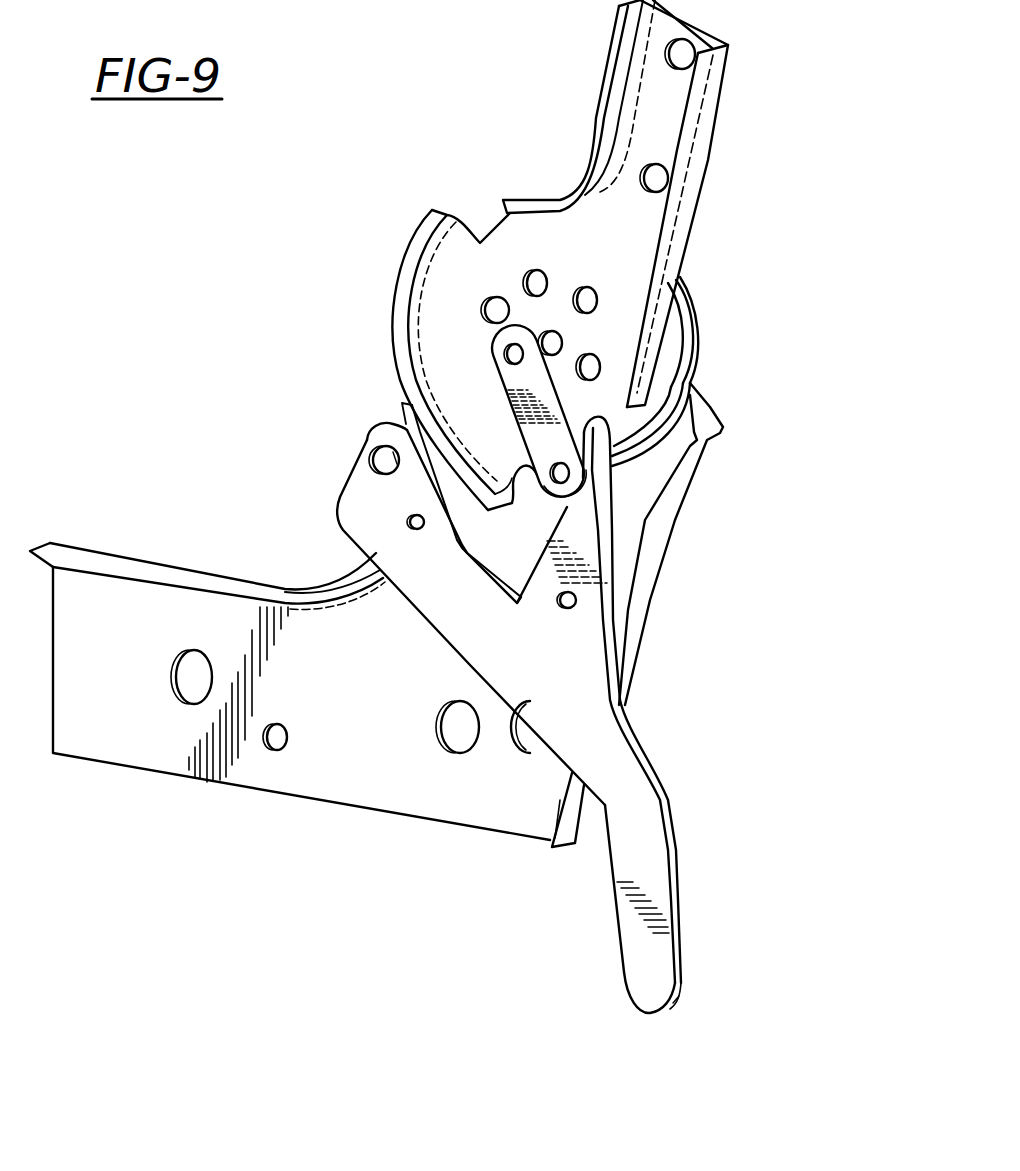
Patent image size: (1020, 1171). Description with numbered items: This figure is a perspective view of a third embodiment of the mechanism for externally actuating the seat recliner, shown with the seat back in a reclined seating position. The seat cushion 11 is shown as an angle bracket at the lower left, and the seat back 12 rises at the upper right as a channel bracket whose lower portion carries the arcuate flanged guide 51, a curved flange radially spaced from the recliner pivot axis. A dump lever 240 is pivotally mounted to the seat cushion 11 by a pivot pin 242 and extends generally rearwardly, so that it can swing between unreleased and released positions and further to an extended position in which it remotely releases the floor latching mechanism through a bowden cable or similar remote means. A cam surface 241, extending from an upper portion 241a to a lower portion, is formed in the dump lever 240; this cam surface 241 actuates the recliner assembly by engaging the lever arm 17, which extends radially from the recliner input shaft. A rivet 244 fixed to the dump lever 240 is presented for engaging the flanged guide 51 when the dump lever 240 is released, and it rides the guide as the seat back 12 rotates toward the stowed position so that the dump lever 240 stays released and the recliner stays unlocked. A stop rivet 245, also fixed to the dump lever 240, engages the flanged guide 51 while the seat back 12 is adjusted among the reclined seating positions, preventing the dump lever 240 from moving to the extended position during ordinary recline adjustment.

The seat cushion 11 is at (130, 760).
The seat back 12 is at (707, 115).
The lever arm 17 is at (567, 412).
The arcuate flanged guide 51 is at (435, 208).
The dump lever 240 is at (678, 901).
The cam surface 241 is at (540, 574).
The upper portion 241a is at (562, 527).
The pivot pin 242 is at (373, 463).
The rivet 244 is at (564, 606).
The stop rivet 245 is at (409, 521).